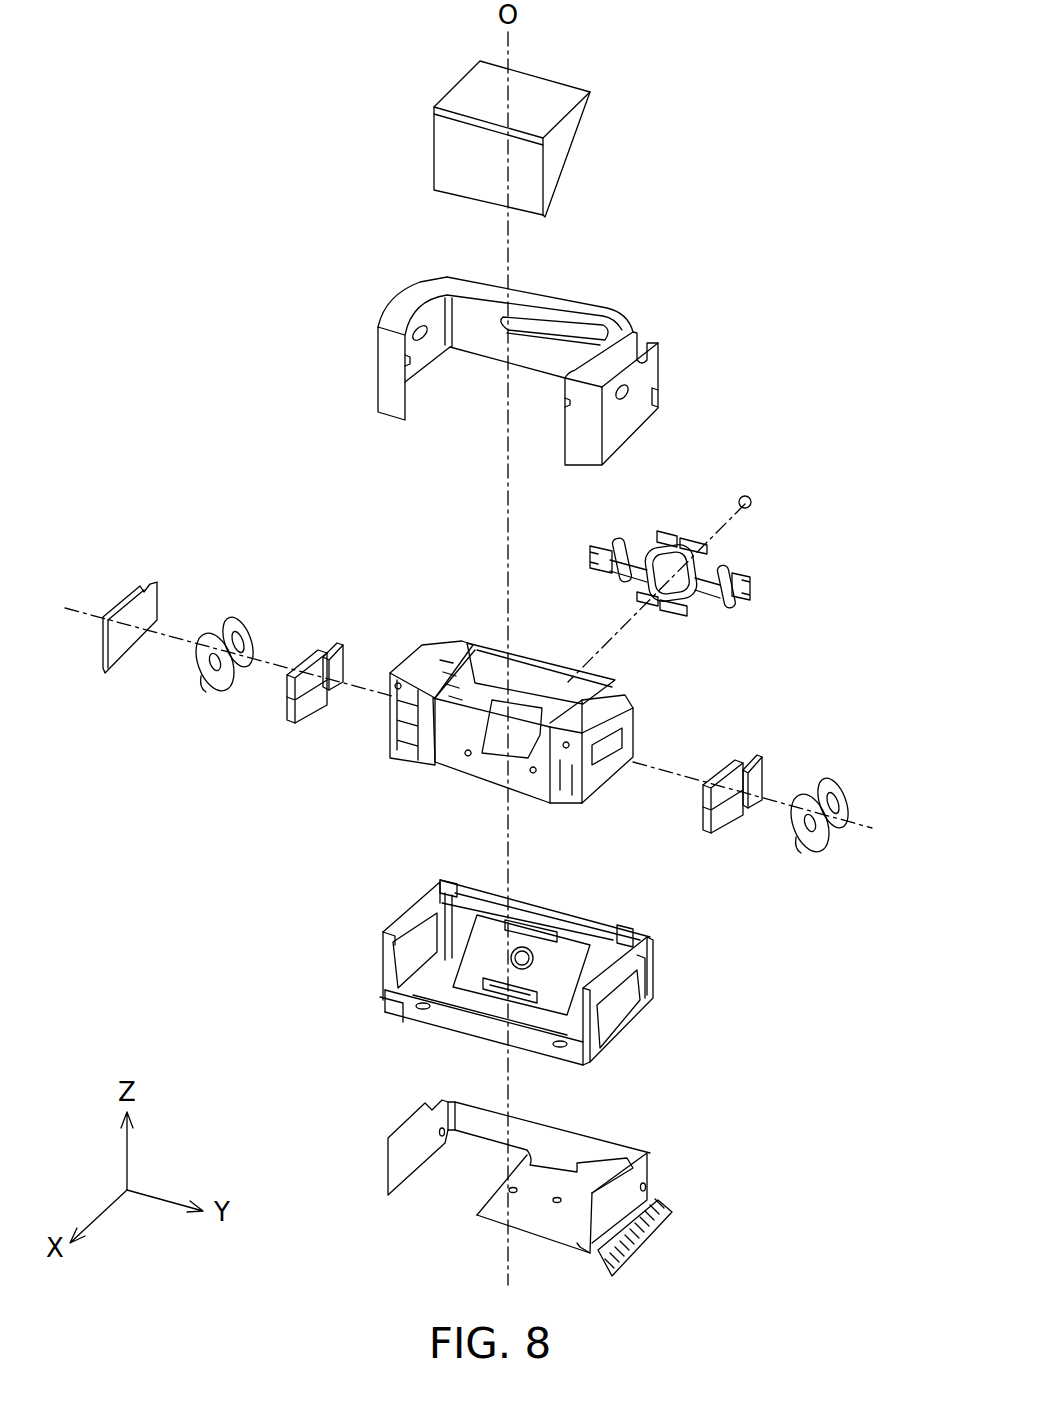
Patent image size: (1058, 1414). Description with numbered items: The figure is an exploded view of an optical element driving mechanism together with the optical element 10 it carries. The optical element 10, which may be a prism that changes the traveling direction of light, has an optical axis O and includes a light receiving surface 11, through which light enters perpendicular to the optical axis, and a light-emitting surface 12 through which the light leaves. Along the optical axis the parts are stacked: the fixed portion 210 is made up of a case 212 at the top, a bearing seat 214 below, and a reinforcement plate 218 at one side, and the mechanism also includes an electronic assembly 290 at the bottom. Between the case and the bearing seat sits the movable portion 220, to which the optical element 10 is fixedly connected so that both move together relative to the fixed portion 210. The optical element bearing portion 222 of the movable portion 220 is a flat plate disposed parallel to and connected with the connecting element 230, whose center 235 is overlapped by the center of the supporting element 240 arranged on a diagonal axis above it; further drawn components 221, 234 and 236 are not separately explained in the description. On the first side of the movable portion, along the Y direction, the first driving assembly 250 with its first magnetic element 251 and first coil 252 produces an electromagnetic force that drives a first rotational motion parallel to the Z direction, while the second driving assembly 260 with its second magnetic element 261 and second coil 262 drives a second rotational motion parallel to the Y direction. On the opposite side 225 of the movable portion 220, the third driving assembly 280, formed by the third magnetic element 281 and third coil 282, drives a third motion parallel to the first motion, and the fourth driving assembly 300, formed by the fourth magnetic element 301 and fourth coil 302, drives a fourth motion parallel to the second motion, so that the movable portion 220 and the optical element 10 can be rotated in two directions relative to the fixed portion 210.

The optical element 10 is at (509, 136).
The light receiving surface 11 is at (472, 93).
The light-emitting surface 12 is at (448, 153).
The fixed portion 210 is at (850, 12).
The case 212 is at (622, 327).
The bearing seat 214 is at (660, 985).
The reinforcement plate 218 is at (138, 583).
The movable portion 220 is at (513, 718).
The front plate of holder 221 is at (487, 763).
The optical element bearing portion 222 is at (537, 672).
The opposite side 225 is at (600, 780).
The connecting element 230 is at (678, 570).
The connecting portions 234 is at (672, 542).
The center of the connecting element 235 is at (675, 555).
The elastic arms 236 is at (600, 558).
The supporting element 240 is at (752, 498).
The first driving assembly 250 is at (285, 601).
The first magnetic element 251 is at (330, 626).
The first coil 252 is at (240, 620).
The second driving assembly 260 is at (248, 727).
The second magnetic element 261 is at (298, 715).
The second coil 262 is at (212, 692).
The third driving assembly 280 is at (795, 742).
The third magnetic element 281 is at (745, 760).
The third coil 282 is at (838, 765).
The electronic assembly 290 is at (655, 1175).
The fourth driving assembly 300 is at (756, 857).
The fourth magnetic element 301 is at (713, 835).
The fourth coil 302 is at (806, 848).